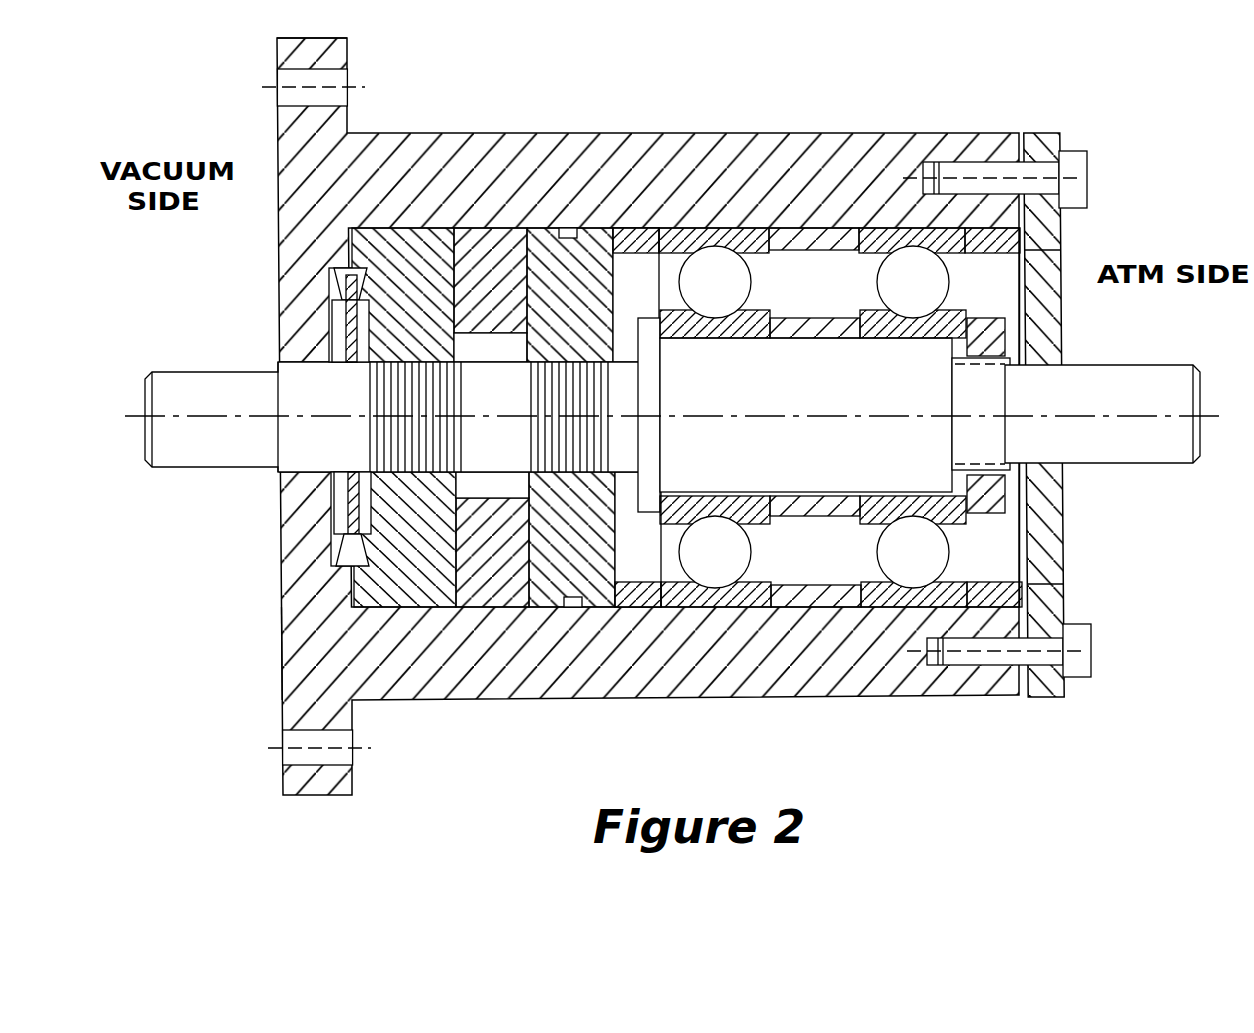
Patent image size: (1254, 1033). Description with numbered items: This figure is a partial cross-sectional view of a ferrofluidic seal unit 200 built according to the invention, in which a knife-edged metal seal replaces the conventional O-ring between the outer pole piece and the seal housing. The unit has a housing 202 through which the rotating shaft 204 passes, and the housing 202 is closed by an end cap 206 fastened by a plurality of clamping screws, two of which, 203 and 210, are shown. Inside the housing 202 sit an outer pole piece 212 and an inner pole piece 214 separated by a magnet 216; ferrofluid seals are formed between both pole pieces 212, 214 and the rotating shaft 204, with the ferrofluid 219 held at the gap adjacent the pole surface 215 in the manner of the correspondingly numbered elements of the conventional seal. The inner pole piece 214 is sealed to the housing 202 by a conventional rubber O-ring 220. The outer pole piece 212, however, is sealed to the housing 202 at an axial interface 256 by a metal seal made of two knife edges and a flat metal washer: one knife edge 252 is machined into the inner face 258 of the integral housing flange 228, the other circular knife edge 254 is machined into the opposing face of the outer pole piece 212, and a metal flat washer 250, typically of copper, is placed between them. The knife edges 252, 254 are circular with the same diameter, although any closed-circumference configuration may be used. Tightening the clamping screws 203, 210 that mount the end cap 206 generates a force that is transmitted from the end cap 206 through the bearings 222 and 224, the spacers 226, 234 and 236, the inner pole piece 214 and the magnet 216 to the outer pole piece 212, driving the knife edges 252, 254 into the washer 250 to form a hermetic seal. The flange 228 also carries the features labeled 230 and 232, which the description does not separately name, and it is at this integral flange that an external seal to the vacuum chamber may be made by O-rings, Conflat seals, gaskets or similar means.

The ferrofluidic seal unit 200 is at (997, 118).
The housing 202 is at (765, 665).
The clamping screw 203 is at (1090, 168).
The rotating shaft 204 is at (1137, 447).
The end cap 206 is at (1055, 555).
The clamping screw 210 is at (1094, 640).
The outer pole piece 212 is at (362, 580).
The inner pole piece 214 is at (550, 247).
The input shaft 215 is at (385, 372).
The magnet 216 is at (497, 590).
The threads 219 is at (583, 360).
The rubber O-ring 220 is at (572, 598).
The bearing 222 is at (715, 240).
The bearing 224 is at (887, 238).
The spacer 226 is at (640, 590).
The integral housing flange 228 is at (290, 52).
The mounting hole 230 is at (288, 98).
The mounting hole 232 is at (302, 757).
The spacer 234 is at (843, 597).
The spacer 236 is at (997, 596).
The metal flat washer 250 is at (340, 300).
The knife edge 252 is at (348, 540).
The circular knife edge 254 is at (395, 600).
The axial interface 256 is at (285, 657).
The inner face 258 is at (352, 253).